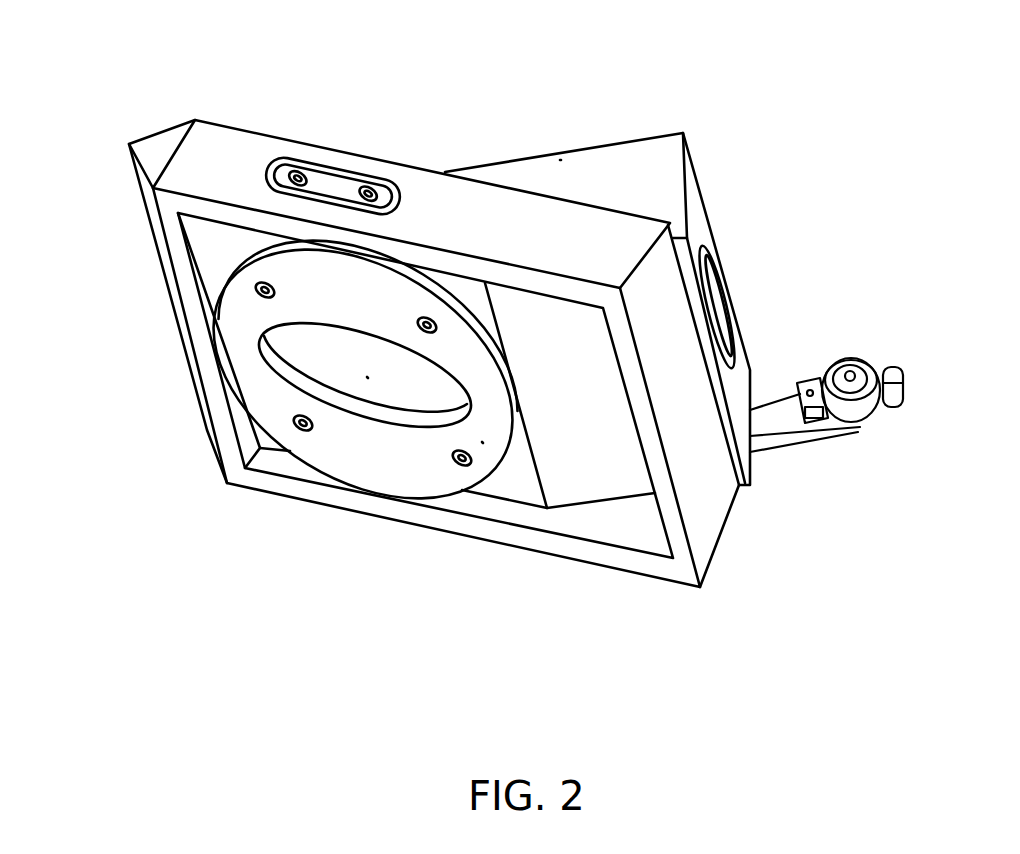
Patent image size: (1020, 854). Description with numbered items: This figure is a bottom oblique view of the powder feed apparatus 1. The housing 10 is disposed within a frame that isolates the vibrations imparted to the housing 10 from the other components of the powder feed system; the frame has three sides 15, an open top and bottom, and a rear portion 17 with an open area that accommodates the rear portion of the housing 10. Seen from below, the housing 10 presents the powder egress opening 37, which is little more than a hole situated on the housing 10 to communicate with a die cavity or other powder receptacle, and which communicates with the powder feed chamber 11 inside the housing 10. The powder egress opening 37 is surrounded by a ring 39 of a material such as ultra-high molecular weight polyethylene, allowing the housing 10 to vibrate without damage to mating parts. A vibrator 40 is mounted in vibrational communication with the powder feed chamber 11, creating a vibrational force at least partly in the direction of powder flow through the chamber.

The powder feed apparatus 1 is at (626, 82).
The housing 10 is at (278, 443).
The powder feed chamber 11 is at (359, 352).
The sides 15 is at (276, 106).
The rear portion 17 is at (717, 518).
The powder egress opening 37 is at (367, 377).
The ring 39 is at (482, 442).
The vibrator 40 is at (873, 425).